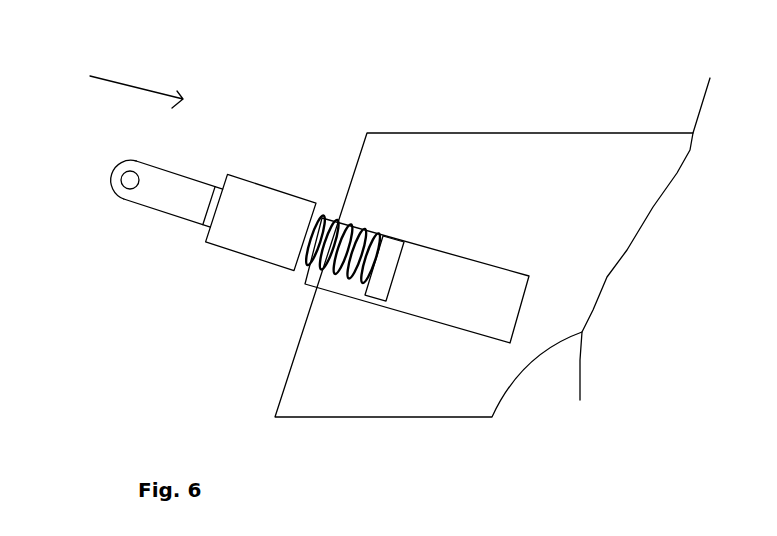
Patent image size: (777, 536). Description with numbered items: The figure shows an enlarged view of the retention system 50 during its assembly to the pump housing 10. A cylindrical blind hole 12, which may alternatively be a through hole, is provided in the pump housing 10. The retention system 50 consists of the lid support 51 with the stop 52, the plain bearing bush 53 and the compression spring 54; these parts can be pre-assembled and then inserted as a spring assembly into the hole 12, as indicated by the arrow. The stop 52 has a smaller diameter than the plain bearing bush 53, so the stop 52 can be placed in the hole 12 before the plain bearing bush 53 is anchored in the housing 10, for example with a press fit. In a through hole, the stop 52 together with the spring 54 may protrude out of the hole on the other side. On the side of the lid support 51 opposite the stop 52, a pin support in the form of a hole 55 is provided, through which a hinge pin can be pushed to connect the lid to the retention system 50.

The pump housing 10 is at (562, 147).
The cylindrical blind hole 12 is at (417, 317).
The retention system 50 is at (228, 287).
The lid support 51 is at (182, 215).
The stop 52 is at (393, 248).
The plain bearing bush 53 is at (255, 195).
The compression spring 54 is at (317, 275).
The hole 55 is at (121, 182).